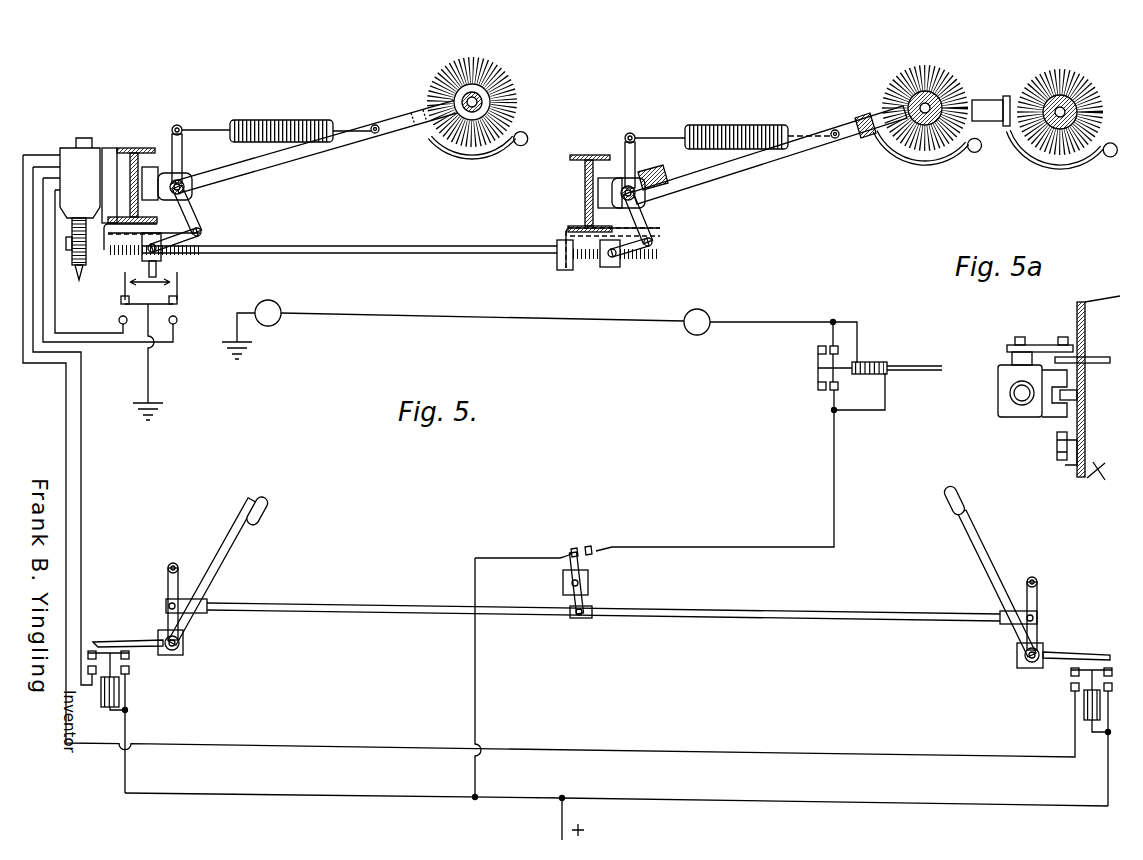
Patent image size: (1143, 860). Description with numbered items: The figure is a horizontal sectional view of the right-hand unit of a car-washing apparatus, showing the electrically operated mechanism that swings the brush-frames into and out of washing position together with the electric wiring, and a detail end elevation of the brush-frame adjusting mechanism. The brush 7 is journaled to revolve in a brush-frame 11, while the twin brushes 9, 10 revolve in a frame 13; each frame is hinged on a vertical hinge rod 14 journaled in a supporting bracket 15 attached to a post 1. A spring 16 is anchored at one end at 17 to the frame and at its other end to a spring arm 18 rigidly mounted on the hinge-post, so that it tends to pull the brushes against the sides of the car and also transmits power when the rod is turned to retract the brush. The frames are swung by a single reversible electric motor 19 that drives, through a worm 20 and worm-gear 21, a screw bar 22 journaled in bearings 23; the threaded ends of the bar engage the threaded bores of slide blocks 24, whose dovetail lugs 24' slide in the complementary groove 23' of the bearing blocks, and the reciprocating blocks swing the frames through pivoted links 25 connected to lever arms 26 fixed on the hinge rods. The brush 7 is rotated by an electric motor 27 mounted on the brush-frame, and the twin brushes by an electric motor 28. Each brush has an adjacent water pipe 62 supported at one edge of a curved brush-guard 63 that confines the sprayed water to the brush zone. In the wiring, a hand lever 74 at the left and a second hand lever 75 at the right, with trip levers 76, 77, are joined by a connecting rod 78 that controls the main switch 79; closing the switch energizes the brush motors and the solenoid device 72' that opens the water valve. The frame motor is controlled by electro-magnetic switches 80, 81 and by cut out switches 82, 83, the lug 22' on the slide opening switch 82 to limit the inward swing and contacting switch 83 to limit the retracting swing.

In FIG. 5, the post 1 is at (131, 148).
In FIG. 5A, the post 1 is at (1090, 475).
In FIG. 5, the brush 7 is at (453, 96).
In FIG. 5, the twin brush 9 is at (934, 97).
In FIG. 5, the twin brush 10 is at (1043, 98).
In FIG. 5, the brush-frame 11 is at (301, 164).
In FIG. 5, the frame 13 is at (762, 167).
In FIG. 5, the hinge rod 14 is at (197, 193).
In FIG. 5, the supporting bracket 15 is at (160, 163).
In FIG. 5, the spring 16 is at (272, 120).
In FIG. 5, the spring anchor 17 is at (375, 125).
In FIG. 5, the spring arm 18 is at (183, 141).
In FIG. 5, the electric motor 19 is at (72, 148).
In FIG. 5, the worm 20 is at (80, 218).
In FIG. 5, the worm-gear 21 is at (80, 280).
In FIG. 5, the screw bar 22 is at (385, 236).
In FIG. 5A, the screw bar 22 is at (995, 401).
In FIG. 5, the lug 22' is at (382, 262).
In FIG. 5, the bearing 23 is at (360, 253).
In FIG. 5A, the groove 23' is at (1037, 443).
In FIG. 5, the slide block 24 is at (625, 272).
In FIG. 5A, the slide block 24 is at (996, 391).
In FIG. 5A, the dovetail lug 24' is at (1087, 395).
In FIG. 5, the pivoted link 25 is at (660, 262).
In FIG. 5A, the pivoted link 25 is at (1043, 345).
In FIG. 5, the lever arm 26 is at (199, 208).
In FIG. 5A, the lever arm 26 is at (1085, 357).
In FIG. 5, the electric motor 27 is at (282, 311).
In FIG. 5, the electric motor 28 is at (689, 334).
In FIG. 5, the water pipe 62 is at (537, 124).
In FIG. 5, the brush-guard 63 is at (443, 152).
In FIG. 5, the solenoid device 72' is at (769, 436).
In FIG. 5, the hand lever 74 is at (232, 565).
In FIG. 5, the hand lever 75 is at (977, 503).
In FIG. 5, the trip lever 76 is at (168, 575).
In FIG. 5, the trip lever 77 is at (1040, 585).
In FIG. 5, the connecting rod 78 is at (653, 613).
In FIG. 5, the main switch 79 is at (599, 567).
In FIG. 5, the electro-magnetic switch 80 is at (1057, 724).
In FIG. 5, the electro-magnetic switch 81 is at (135, 711).
In FIG. 5, the cut out switch 82 is at (193, 304).
In FIG. 5, the cut out switch 83 is at (129, 358).